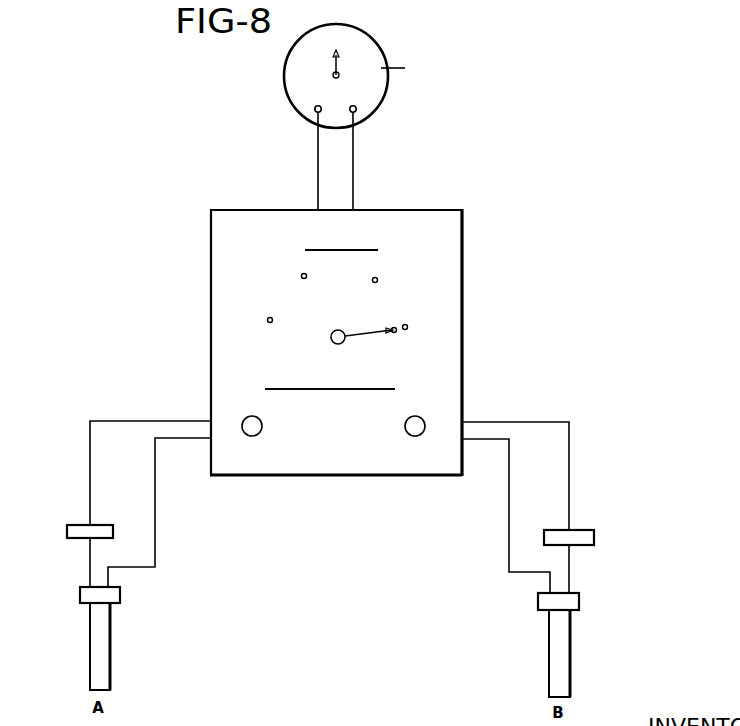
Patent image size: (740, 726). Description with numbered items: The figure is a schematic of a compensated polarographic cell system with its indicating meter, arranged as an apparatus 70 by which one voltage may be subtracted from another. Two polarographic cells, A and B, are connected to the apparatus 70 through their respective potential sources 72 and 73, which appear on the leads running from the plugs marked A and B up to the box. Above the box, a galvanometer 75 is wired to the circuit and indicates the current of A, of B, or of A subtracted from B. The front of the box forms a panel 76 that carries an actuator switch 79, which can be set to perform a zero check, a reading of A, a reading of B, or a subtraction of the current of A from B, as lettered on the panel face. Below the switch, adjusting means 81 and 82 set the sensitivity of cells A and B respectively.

The apparatus 70 is at (326, 342).
The potential source 72 is at (67, 531).
The potential source 73 is at (591, 537).
The galvanometer 75 is at (381, 102).
The panel 76 is at (452, 251).
The actuator switch 79 is at (375, 333).
The sensitivity adjusting means 81 is at (261, 423).
The sensitivity adjusting means 82 is at (405, 427).